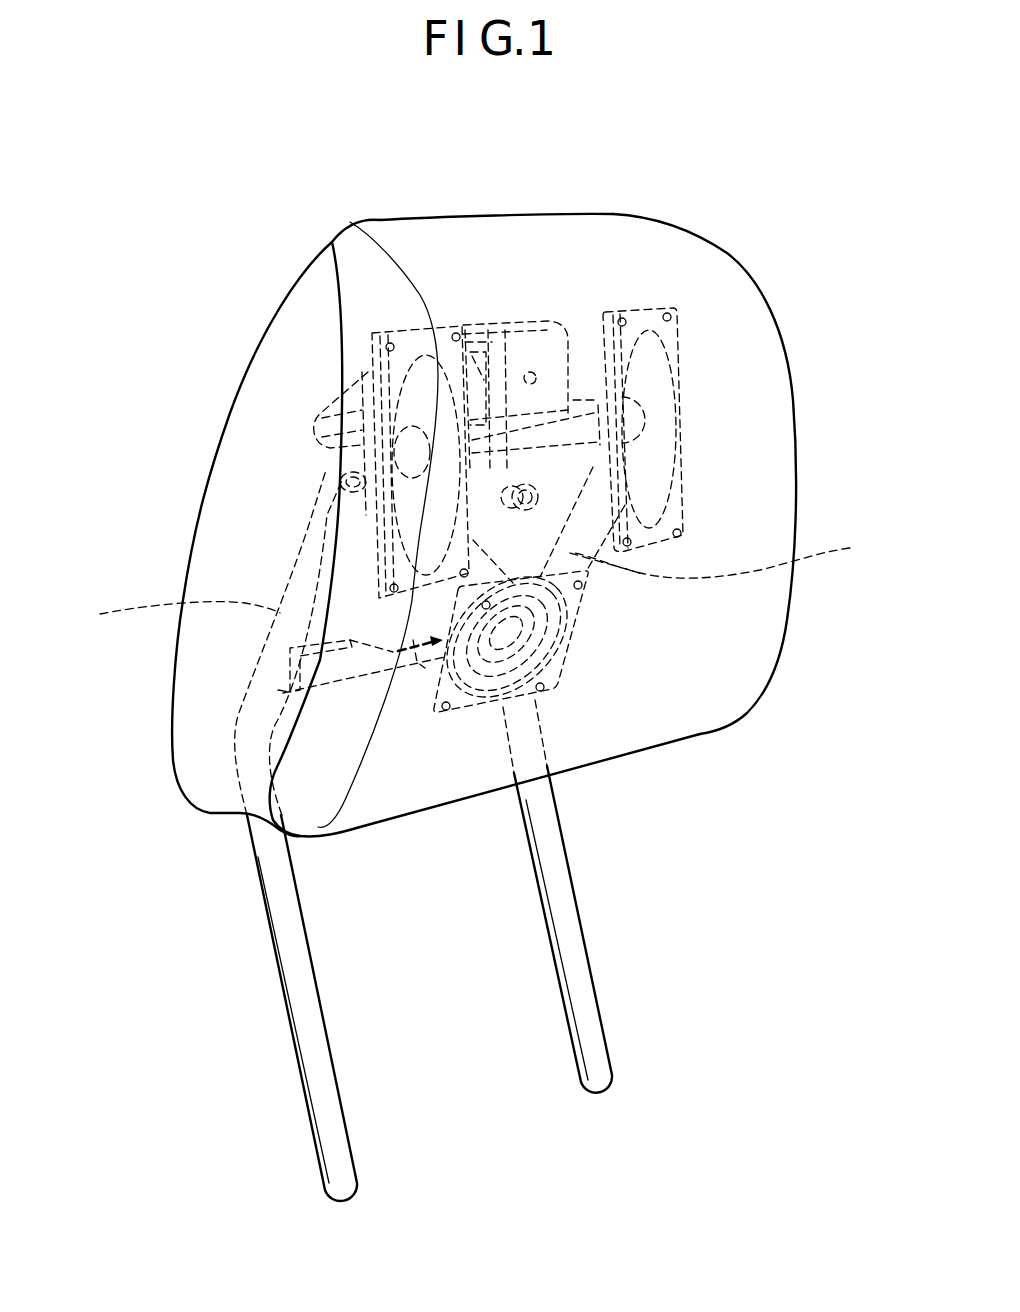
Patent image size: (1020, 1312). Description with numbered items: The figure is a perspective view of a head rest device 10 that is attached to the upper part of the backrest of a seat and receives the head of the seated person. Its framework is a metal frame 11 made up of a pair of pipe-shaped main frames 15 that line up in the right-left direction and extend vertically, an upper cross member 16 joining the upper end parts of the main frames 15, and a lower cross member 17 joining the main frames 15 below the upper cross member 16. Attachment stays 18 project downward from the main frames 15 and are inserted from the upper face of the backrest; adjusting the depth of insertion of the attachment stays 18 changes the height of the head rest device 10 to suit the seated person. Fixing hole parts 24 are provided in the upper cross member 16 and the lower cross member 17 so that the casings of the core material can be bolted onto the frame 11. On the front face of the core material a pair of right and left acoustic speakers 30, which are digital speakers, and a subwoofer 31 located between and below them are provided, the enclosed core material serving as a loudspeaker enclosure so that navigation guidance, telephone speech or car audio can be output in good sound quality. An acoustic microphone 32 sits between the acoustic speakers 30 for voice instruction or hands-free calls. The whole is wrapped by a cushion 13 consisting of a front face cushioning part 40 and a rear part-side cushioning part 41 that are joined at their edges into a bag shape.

The head rest device 10 is at (290, 289).
The frame 11 is at (318, 502).
The cushion 13 is at (791, 607).
The main frame 15 is at (473, 580).
The upper cross member 16 is at (597, 373).
The lower cross member 17 is at (415, 660).
The attachment stay 18 is at (300, 1090).
The fixing hole part 24 is at (325, 662).
The acoustic speaker 30 is at (412, 330).
The subwoofer 31 is at (560, 662).
The acoustic microphone 32 is at (522, 485).
The front face cushioning part 40 is at (735, 416).
The rear part-side cushioning part 41 is at (267, 323).